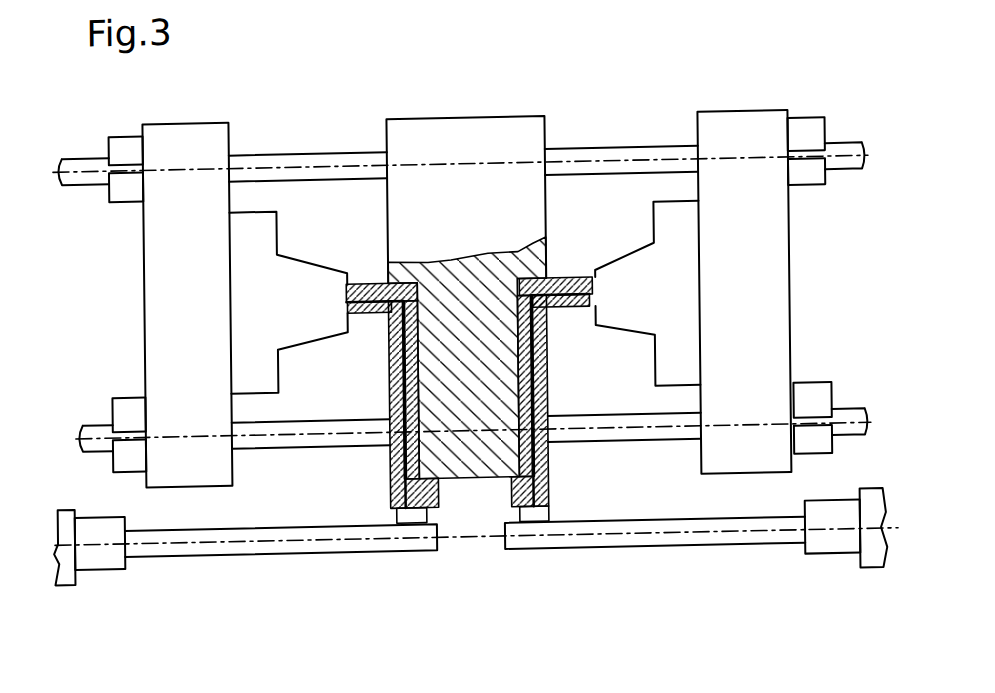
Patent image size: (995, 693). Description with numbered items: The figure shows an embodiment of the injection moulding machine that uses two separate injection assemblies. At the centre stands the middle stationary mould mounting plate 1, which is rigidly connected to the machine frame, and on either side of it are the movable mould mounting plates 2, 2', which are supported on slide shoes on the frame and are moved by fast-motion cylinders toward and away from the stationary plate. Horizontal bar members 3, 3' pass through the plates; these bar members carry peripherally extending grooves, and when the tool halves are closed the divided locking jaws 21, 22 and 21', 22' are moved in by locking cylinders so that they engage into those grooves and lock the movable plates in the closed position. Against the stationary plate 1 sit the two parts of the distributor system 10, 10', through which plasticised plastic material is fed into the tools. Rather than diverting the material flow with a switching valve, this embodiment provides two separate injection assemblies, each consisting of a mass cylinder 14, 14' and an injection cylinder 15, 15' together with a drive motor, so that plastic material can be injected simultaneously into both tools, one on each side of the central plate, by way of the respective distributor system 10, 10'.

The middle stationary mould mounting plate 1 is at (440, 139).
The movable mould mounting plate 2 is at (744, 259).
The movable mould mounting plate 2' is at (195, 274).
The bar member 3 is at (704, 117).
The bar member 3' is at (222, 121).
The distributor system 10 is at (577, 454).
The distributor system 10' is at (419, 456).
The mass cylinder 14 is at (655, 574).
The mass cylinder 14' is at (282, 599).
The injection cylinder 15 is at (847, 561).
The injection cylinder 15' is at (90, 591).
The divided locking jaw 21 is at (817, 231).
The divided locking jaw 21' is at (114, 246).
The divided locking jaw 22 is at (796, 395).
The divided locking jaw 22' is at (133, 423).